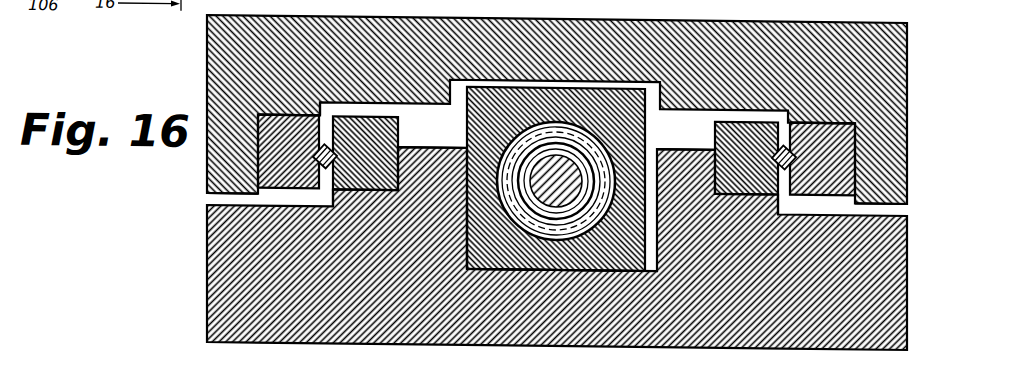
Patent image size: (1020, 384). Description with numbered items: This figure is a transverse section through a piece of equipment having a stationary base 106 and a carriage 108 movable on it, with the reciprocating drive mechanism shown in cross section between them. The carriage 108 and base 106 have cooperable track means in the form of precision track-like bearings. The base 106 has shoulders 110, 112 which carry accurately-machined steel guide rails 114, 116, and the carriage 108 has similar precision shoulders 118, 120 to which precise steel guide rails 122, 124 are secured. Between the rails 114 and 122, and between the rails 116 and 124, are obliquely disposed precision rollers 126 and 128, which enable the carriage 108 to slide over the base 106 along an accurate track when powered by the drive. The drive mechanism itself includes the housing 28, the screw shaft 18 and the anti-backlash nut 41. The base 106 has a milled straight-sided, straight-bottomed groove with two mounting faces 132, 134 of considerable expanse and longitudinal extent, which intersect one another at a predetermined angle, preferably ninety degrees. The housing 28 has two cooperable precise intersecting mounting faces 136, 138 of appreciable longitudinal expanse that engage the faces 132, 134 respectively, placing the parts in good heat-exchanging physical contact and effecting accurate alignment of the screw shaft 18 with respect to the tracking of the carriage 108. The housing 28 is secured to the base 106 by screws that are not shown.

The screw shaft 18 is at (548, 162).
The housing 28 is at (592, 91).
The anti-backlash nut 41 is at (563, 130).
The stationary base 106 is at (217, 313).
The carriage 108 is at (217, 50).
The shoulder 110 is at (353, 201).
The shoulder 112 is at (402, 160).
The guide rail 114 is at (400, 131).
The guide rail 116 is at (720, 132).
The shoulder 118 is at (256, 167).
The shoulder 120 is at (266, 111).
The guide rail 122 is at (272, 153).
The guide rail 124 is at (848, 145).
The precision roller 126 is at (325, 143).
The precision roller 128 is at (784, 140).
The mounting face 132 is at (458, 218).
The mounting face 134 is at (500, 269).
The mounting face 136 is at (465, 237).
The mounting face 138 is at (545, 259).